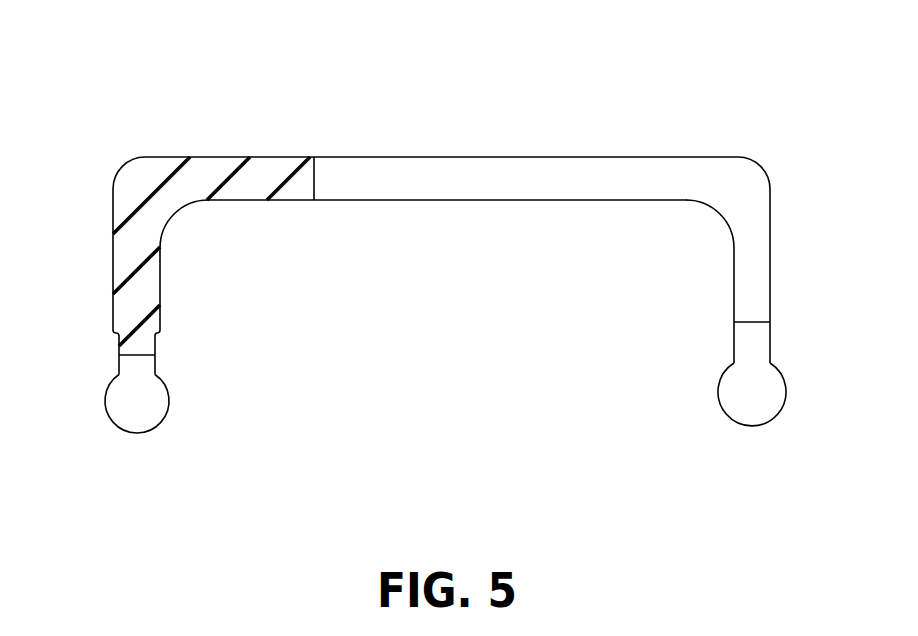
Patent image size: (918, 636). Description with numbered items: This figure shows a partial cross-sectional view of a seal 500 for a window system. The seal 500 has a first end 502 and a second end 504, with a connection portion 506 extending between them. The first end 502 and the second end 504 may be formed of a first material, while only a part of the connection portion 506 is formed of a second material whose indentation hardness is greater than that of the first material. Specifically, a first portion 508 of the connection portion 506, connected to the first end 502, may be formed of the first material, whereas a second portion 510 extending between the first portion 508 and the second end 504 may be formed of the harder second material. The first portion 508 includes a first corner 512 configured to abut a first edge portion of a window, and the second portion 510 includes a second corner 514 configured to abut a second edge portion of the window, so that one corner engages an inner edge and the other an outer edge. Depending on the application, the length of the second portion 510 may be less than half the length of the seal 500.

The seal 500 is at (74, 62).
The first end 502 is at (807, 338).
The second end 504 is at (87, 348).
The connection portion 506 is at (387, 117).
The first portion 508 is at (768, 185).
The second portion 510 is at (113, 185).
The first corner 512 is at (688, 232).
The second corner 514 is at (198, 234).